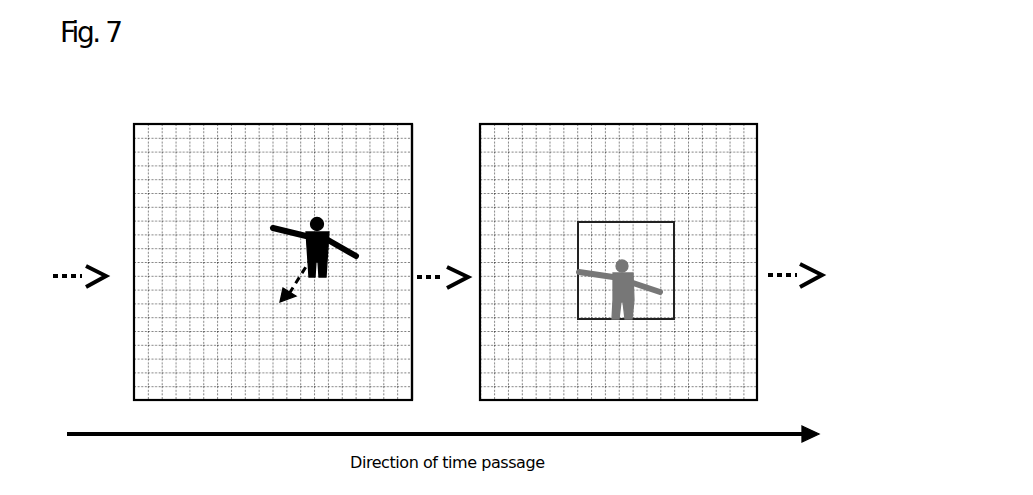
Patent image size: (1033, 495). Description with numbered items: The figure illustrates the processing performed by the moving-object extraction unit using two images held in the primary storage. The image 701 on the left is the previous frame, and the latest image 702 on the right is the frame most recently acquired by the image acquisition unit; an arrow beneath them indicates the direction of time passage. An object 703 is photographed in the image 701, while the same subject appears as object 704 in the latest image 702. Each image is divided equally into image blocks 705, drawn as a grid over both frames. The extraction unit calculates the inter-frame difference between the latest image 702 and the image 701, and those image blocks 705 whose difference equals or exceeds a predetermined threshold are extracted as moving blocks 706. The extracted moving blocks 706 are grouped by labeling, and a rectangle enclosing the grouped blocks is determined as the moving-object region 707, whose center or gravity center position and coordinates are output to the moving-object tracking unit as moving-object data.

The image 701 is at (329, 123).
The latest image 702 is at (694, 123).
The object 703 is at (331, 225).
The object 704 is at (615, 262).
The image block 705 is at (409, 163).
The moving block 706 is at (658, 243).
The moving-object region 707 is at (672, 302).